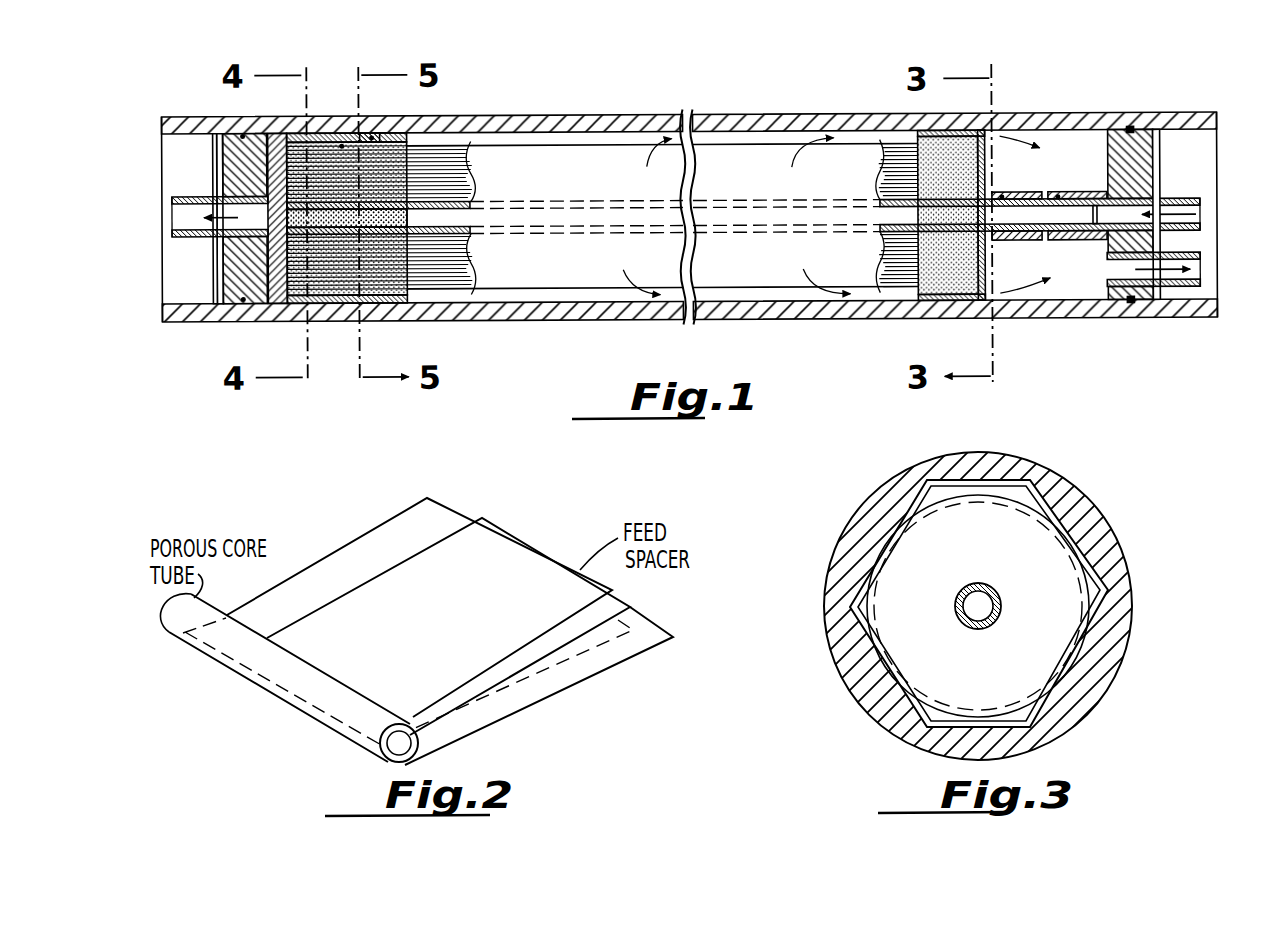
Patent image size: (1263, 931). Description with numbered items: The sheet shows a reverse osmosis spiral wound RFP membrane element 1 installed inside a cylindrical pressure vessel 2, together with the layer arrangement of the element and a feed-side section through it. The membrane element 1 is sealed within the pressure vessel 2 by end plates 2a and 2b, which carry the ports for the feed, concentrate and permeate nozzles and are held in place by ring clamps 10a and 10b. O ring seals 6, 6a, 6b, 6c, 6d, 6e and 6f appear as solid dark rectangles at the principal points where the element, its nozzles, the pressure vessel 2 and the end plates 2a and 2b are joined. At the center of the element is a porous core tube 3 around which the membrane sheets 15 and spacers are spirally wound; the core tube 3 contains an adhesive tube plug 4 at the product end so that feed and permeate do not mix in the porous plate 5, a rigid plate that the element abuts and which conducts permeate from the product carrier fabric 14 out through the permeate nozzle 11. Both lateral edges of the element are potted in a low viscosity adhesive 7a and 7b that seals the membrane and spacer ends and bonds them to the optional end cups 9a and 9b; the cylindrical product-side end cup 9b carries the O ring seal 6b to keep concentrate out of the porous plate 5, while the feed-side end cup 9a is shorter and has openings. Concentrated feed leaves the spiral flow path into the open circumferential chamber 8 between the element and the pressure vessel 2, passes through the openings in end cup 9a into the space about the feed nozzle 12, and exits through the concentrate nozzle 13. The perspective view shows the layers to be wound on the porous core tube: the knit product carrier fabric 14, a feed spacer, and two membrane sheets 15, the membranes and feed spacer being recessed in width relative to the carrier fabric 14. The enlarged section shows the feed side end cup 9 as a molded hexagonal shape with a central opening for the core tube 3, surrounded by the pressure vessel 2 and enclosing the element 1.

In FIG. 1, the membrane element 1 is at (520, 167).
In FIG. 3, the membrane element 1 is at (1090, 603).
In FIG. 1, the pressure vessel 2 is at (568, 120).
In FIG. 3, the pressure vessel 2 is at (1090, 507).
In FIG. 1, the end plate 2a is at (1118, 154).
In FIG. 1, the end plate 2b is at (218, 134).
In FIG. 1, the porous core tube 3 is at (636, 206).
In FIG. 3, the porous core tube 3 is at (993, 588).
In FIG. 1, the tube plug 4 is at (450, 228).
In FIG. 1, the porous plate 5 is at (282, 140).
In FIG. 1, the O ring seal 6 is at (243, 136).
In FIG. 1, the O ring seal 6a is at (247, 233).
In FIG. 1, the O ring seal 6b is at (372, 140).
In FIG. 1, the O ring seal 6c is at (1002, 201).
In FIG. 1, the O ring seal 6d is at (1058, 201).
In FIG. 1, the O ring seal 6e is at (1131, 136).
In FIG. 1, the O ring seal 6f is at (1118, 202).
In FIG. 1, the low viscosity adhesive 7a is at (915, 145).
In FIG. 1, the low viscosity adhesive 7b is at (408, 142).
In FIG. 1, the circumferential chamber 8 is at (776, 145).
In FIG. 3, the feed side end cup 9 is at (1080, 658).
In FIG. 1, the feed-side end cup 9a is at (933, 145).
In FIG. 1, the product-side end cup 9b is at (342, 147).
In FIG. 1, the ring clamp 10a is at (1160, 152).
In FIG. 1, the ring clamp 10b is at (215, 158).
In FIG. 1, the permeate nozzle 11 is at (180, 199).
In FIG. 1, the feed nozzle 12 is at (1200, 228).
In FIG. 1, the concentrate nozzle 13 is at (1204, 293).
In FIG. 1, the product carrier fabric 14 is at (302, 300).
In FIG. 2, the product carrier fabric 14 is at (387, 520).
In FIG. 1, the membrane sheets 15 is at (445, 280).
In FIG. 2, the membrane sheets 15 is at (508, 680).